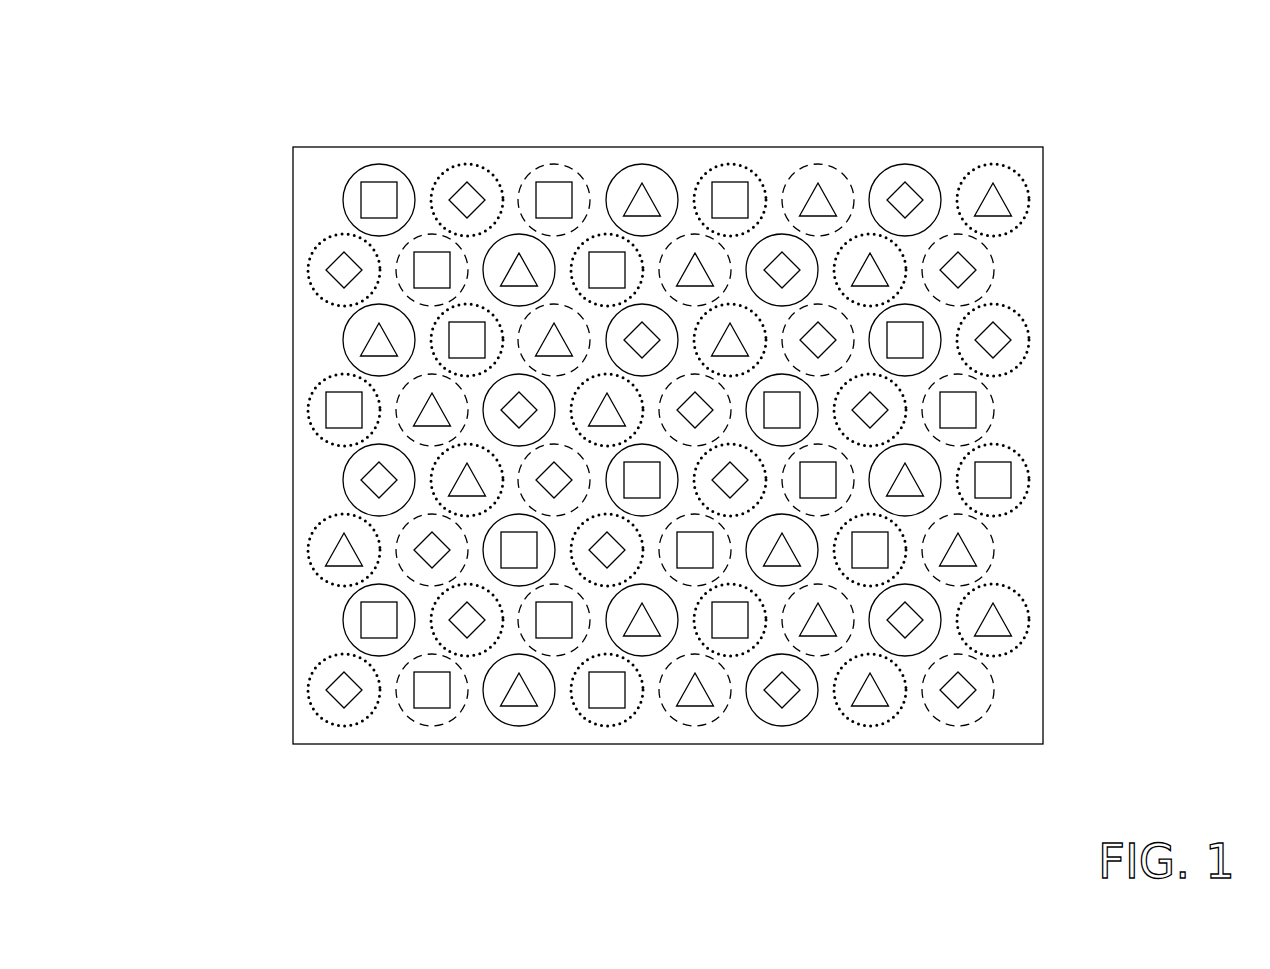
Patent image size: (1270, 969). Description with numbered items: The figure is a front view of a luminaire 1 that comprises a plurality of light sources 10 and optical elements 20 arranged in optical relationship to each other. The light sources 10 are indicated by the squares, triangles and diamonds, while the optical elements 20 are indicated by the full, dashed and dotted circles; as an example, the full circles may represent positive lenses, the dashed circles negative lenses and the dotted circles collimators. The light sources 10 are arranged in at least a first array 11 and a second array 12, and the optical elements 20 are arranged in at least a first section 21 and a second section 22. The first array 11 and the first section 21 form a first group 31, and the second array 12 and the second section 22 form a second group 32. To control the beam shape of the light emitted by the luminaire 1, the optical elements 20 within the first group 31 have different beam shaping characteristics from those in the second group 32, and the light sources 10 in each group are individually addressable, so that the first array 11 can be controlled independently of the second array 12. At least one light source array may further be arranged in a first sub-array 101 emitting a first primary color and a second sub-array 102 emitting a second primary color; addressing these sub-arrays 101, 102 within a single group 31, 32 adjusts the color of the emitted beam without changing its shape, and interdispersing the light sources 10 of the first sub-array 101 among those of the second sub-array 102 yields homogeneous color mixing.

The luminaire 1 is at (134, 89).
The light sources 10 is at (1001, 192).
The optical elements 20 is at (1027, 207).
The first array 11 is at (392, 182).
The second array 12 is at (436, 708).
The first section 21 is at (377, 172).
The second section 22 is at (419, 725).
The first group 31 is at (347, 62).
The second group 32 is at (395, 832).
The first sub-array 101 is at (731, 323).
The second sub-array 102 is at (878, 399).